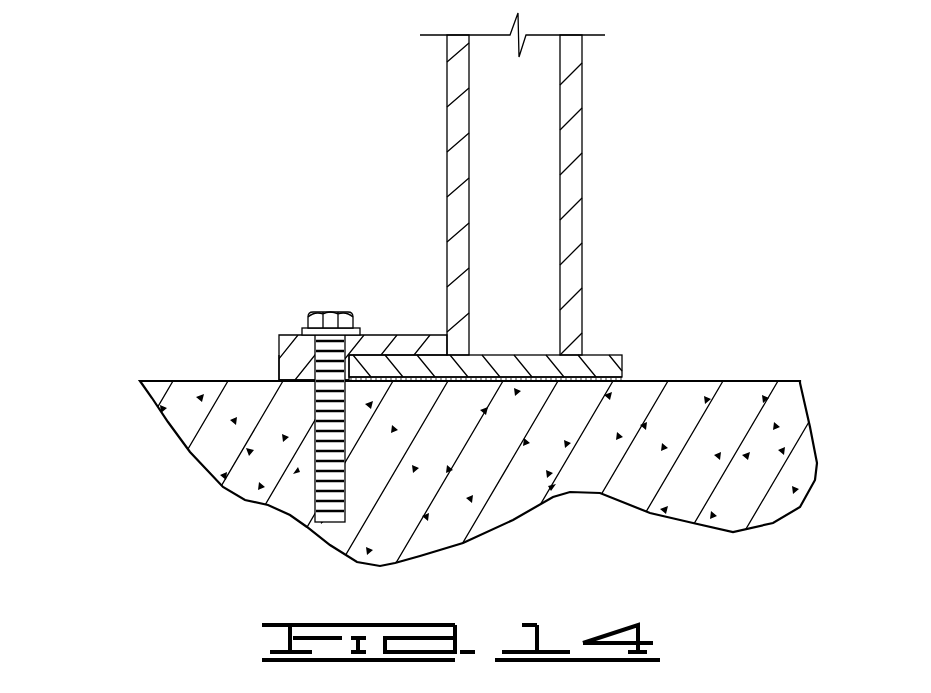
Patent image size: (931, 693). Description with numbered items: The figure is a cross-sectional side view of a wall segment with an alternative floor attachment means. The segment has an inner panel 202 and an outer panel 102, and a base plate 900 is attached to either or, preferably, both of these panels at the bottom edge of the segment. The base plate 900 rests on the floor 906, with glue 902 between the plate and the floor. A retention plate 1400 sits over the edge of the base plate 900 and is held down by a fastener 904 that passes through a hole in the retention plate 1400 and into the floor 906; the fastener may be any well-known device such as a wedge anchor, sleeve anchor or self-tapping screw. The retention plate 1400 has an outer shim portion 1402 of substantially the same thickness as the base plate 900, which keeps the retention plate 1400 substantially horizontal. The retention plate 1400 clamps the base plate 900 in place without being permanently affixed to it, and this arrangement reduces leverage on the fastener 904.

The outer panel 102 is at (517, 184).
The inner panel 202 is at (447, 88).
The base plate 900 is at (598, 355).
The glue 902 is at (625, 379).
The fastener 904 is at (332, 311).
The floor 906 is at (163, 380).
The retention plate 1400 is at (292, 334).
The shim portion 1402 is at (279, 367).